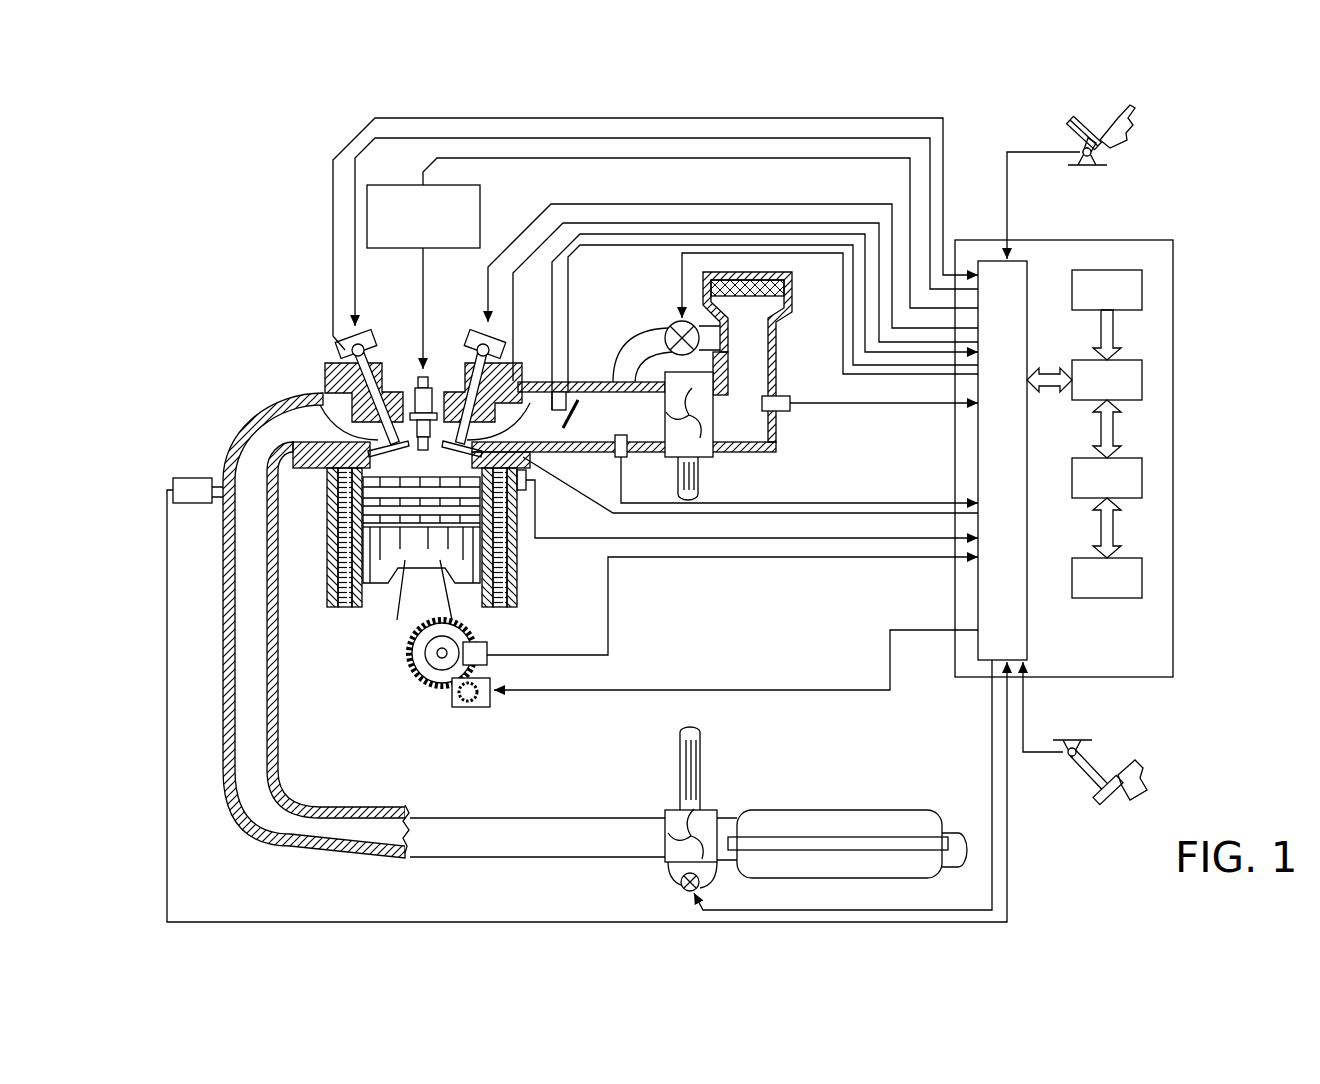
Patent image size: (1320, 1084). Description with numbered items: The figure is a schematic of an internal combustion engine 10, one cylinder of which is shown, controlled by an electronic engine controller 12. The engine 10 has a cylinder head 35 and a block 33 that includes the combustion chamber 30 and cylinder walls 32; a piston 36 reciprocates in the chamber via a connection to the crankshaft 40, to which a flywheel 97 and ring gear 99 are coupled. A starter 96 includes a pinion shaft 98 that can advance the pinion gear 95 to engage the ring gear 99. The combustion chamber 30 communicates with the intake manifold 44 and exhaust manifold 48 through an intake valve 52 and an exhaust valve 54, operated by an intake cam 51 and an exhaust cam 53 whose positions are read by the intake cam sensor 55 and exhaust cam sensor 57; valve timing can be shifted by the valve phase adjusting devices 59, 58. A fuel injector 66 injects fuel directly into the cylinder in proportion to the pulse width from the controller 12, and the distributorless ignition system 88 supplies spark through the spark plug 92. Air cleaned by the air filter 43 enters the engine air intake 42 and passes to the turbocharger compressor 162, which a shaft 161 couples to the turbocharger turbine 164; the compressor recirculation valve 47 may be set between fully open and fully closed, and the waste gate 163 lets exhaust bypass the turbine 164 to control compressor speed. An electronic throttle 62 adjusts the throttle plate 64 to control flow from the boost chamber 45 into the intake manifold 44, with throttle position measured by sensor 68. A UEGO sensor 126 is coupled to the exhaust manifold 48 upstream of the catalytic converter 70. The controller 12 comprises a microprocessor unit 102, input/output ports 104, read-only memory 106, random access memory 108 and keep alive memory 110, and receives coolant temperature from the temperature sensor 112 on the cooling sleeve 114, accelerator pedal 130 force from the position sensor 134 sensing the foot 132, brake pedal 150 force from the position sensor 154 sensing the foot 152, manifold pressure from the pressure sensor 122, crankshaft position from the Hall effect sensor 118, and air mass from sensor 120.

The internal combustion engine 10 is at (262, 320).
The electronic engine controller 12 is at (1173, 242).
The combustion chamber 30 is at (420, 458).
The cylinder walls 32 is at (356, 602).
The block 33 is at (326, 501).
The cylinder head 35 is at (322, 362).
The piston 36 is at (415, 558).
The crankshaft 40 is at (438, 668).
The engine air intake 42 is at (630, 305).
The air filter 43 is at (748, 288).
The intake manifold 44 is at (522, 428).
The boost chamber 45 is at (620, 428).
The compressor recirculation valve 47 is at (668, 325).
The exhaust manifold 48 is at (280, 434).
The intake cam 51 is at (478, 335).
The intake valve 52 is at (472, 431).
The exhaust cam 53 is at (365, 338).
The exhaust valve 54 is at (375, 440).
The intake cam sensor 55 is at (500, 350).
The exhaust cam sensor 57 is at (345, 343).
The valve phase adjusting device 58 is at (373, 345).
The valve phase adjusting device 59 is at (479, 357).
The electronic throttle 62 is at (577, 421).
The throttle plate 64 is at (574, 428).
The fuel injector 66 is at (530, 486).
The throttle position sensor 68 is at (520, 385).
The catalytic converter 70 is at (775, 815).
The distributorless ignition system 88 is at (383, 185).
The spark plug 92 is at (427, 372).
The pinion gear 95 is at (474, 707).
The starter 96 is at (490, 700).
The flywheel 97 is at (425, 662).
The pinion shaft 98 is at (462, 704).
The ring gear 99 is at (440, 690).
The microprocessor unit 102 is at (1142, 380).
The input/output ports 104 is at (1032, 268).
The read-only memory 106 is at (1142, 288).
The random access memory 108 is at (1142, 478).
The keep alive memory 110 is at (1142, 578).
The temperature sensor 112 is at (542, 498).
The cooling sleeve 114 is at (508, 556).
The Hall effect sensor 118 is at (482, 642).
The air mass sensor 120 is at (790, 400).
The pressure sensor 122 is at (615, 456).
The Universal Exhaust Gas Oxygen sensor 126 is at (173, 480).
The accelerator pedal 130 is at (1076, 136).
The foot 132 is at (1125, 120).
The position sensor 134 is at (1100, 152).
The brake pedal 150 is at (1095, 795).
The foot 152 is at (1122, 770).
The position sensor 154 is at (1062, 746).
The shaft 161 is at (678, 474).
The turbocharger compressor 162 is at (705, 448).
The waste gate 163 is at (683, 891).
The turbocharger turbine 164 is at (668, 810).